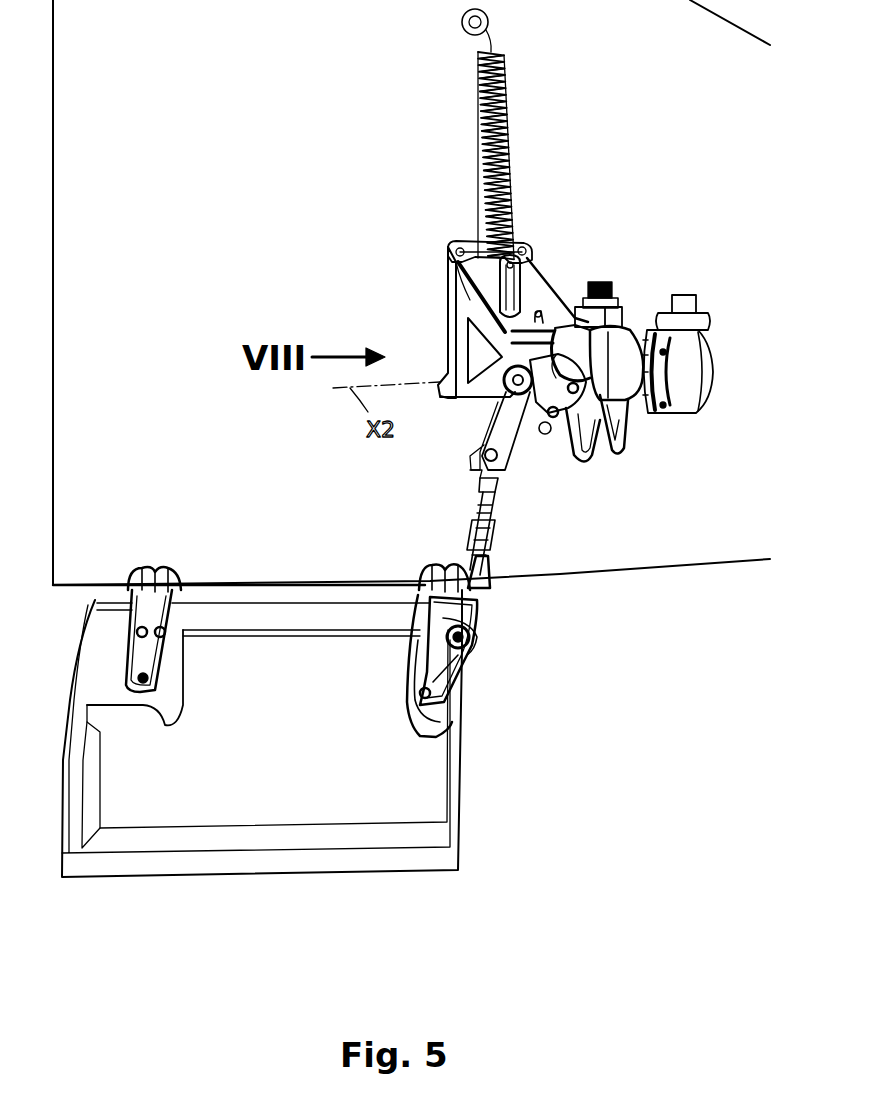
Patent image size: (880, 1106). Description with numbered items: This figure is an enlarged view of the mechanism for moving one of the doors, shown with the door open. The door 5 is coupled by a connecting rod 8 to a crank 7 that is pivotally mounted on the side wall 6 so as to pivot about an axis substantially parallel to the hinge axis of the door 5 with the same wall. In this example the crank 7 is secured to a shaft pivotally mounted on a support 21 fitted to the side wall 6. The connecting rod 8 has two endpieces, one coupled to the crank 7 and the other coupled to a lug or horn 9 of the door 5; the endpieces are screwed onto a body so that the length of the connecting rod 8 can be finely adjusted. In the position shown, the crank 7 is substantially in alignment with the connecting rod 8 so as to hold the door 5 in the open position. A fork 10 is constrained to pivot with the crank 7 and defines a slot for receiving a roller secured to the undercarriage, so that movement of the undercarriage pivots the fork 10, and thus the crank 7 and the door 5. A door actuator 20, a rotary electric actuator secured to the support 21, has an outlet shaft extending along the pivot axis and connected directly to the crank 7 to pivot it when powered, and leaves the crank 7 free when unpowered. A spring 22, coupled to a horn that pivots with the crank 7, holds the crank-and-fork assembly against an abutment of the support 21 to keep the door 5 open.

The door 5 is at (238, 812).
The side wall 6 is at (570, 560).
The crank 7 is at (500, 420).
The connecting rod 8 is at (452, 538).
The horn 9 is at (462, 662).
The fork 10 is at (615, 428).
The door actuator 20 is at (683, 415).
The support 21 is at (465, 300).
The spring 22 is at (482, 146).